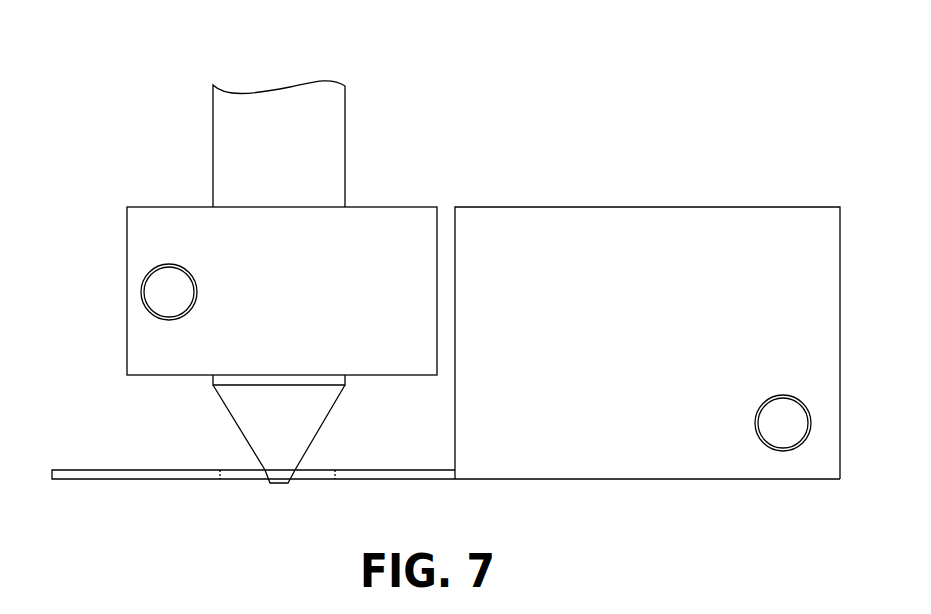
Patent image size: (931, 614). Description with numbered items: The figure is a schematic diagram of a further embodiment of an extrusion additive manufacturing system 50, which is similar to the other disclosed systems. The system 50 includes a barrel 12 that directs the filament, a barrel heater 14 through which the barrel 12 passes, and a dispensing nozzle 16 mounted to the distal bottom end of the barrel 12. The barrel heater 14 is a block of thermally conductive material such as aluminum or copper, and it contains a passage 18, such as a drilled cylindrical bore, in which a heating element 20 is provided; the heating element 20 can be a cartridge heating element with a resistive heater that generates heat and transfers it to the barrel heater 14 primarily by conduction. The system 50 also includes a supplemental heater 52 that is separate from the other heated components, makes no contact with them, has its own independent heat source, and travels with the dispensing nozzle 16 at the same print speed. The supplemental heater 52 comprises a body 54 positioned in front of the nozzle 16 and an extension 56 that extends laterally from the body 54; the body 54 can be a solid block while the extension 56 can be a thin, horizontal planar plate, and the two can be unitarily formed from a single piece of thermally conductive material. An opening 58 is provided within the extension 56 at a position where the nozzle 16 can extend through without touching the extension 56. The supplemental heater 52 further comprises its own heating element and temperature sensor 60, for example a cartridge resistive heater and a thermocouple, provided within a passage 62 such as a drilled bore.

The barrel 12 is at (347, 140).
The barrel heater 14 is at (268, 304).
The dispensing nozzle 16 is at (266, 437).
The passage 18 is at (142, 273).
The heating element 20 is at (155, 304).
The extrusion AM system 50 is at (632, 68).
The supplemental heater 52 is at (647, 313).
The body 54 is at (634, 355).
The extension 56 is at (90, 470).
The opening 58 is at (231, 496).
The heating element and temperature sensor 60 is at (769, 435).
The passage 62 is at (743, 423).